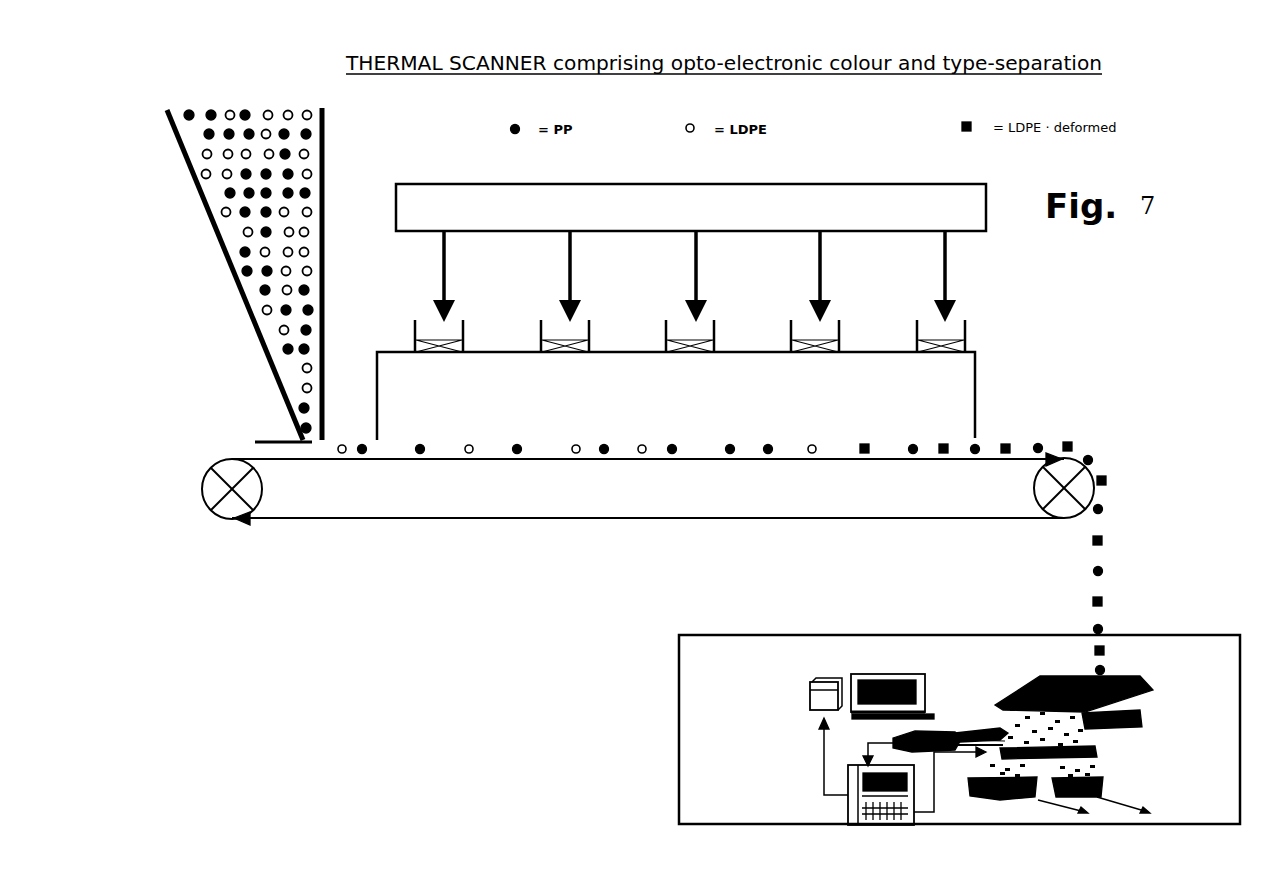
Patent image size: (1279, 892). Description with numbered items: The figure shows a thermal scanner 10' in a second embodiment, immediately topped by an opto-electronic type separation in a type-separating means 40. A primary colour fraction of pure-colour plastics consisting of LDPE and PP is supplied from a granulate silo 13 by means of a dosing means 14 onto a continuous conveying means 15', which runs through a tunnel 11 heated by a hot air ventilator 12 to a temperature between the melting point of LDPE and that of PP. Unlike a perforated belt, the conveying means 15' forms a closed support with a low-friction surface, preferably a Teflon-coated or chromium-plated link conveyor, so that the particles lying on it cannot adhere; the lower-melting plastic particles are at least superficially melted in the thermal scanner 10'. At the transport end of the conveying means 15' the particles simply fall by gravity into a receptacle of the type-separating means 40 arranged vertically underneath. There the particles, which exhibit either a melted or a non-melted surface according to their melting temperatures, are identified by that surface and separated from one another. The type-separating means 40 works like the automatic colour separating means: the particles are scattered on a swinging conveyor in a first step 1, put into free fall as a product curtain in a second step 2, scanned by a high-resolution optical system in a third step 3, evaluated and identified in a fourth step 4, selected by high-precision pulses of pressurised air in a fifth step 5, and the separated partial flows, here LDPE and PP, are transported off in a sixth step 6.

The thermal scanner 10' is at (1246, 328).
The tunnel 11 is at (910, 400).
The hot air ventilator 12 is at (968, 232).
The granulate silo 13 is at (332, 171).
The dosing means 14 is at (266, 434).
The continuous conveying means 15' is at (648, 521).
The type-separating means 40 is at (878, 730).
The feed chute 1 is at (1018, 688).
The scanner head 2 is at (970, 719).
The signal line to controller 3 is at (878, 746).
The output line 4 is at (823, 765).
The control line to separator 5 is at (950, 779).
The sorted output 6 is at (1178, 803).